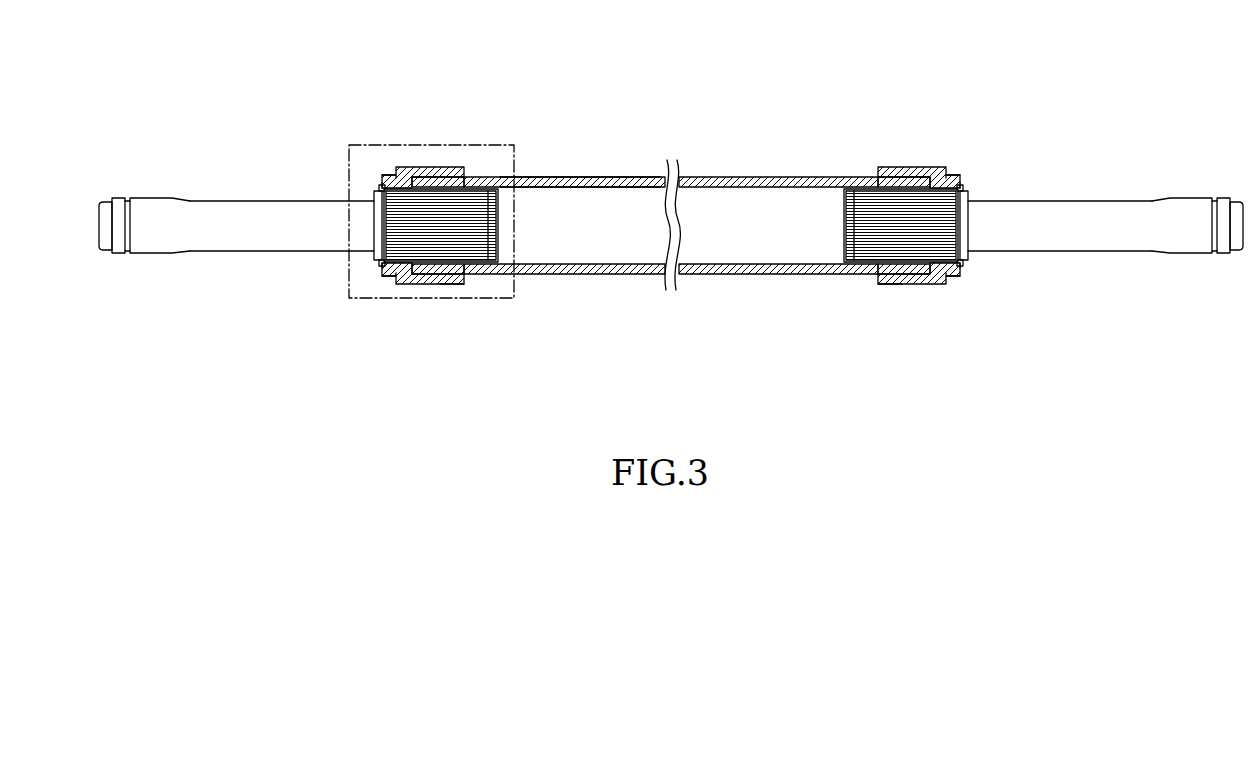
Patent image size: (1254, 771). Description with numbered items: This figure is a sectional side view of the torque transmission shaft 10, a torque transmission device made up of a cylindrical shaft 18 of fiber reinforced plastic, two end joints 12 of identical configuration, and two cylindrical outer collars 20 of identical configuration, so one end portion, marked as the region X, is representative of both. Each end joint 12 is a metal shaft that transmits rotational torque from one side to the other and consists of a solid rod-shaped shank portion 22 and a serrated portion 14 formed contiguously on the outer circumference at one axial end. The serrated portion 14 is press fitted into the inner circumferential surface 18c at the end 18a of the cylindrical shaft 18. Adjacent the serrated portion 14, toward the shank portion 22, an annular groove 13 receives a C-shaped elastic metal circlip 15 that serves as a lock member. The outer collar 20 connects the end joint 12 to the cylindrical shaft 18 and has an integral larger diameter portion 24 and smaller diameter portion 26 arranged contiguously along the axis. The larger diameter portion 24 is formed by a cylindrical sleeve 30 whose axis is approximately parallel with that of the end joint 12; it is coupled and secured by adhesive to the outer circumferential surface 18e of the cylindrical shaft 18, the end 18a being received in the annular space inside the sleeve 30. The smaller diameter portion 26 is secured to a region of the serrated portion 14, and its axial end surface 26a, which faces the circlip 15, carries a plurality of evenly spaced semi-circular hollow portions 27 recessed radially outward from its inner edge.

The torque transmission shaft 10 is at (686, 124).
The end joint 12 is at (198, 198).
The annular groove 13 is at (381, 216).
The serrated portion 14 is at (481, 195).
The circlip 15 is at (379, 186).
The cylindrical shaft 18 is at (757, 178).
The end 18a is at (417, 284).
The inner circumferential surface 18c is at (562, 188).
The outer circumferential surface 18e is at (578, 177).
The outer collar 20 is at (435, 167).
The shank portion 22 is at (255, 218).
The larger diameter portion 24 is at (453, 176).
The smaller diameter portion 26 is at (387, 182).
The end surface 26a is at (381, 268).
The hollow portion 27 is at (377, 188).
The sleeve 30 is at (453, 285).
The portion X is at (378, 300).